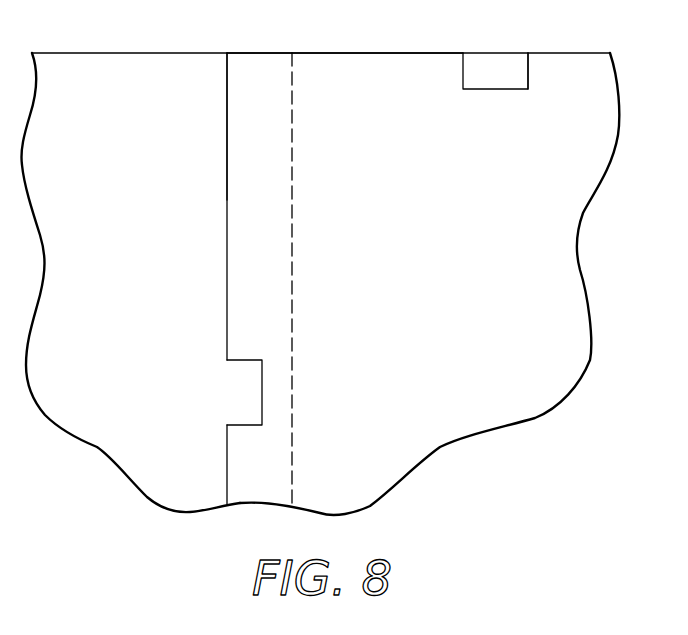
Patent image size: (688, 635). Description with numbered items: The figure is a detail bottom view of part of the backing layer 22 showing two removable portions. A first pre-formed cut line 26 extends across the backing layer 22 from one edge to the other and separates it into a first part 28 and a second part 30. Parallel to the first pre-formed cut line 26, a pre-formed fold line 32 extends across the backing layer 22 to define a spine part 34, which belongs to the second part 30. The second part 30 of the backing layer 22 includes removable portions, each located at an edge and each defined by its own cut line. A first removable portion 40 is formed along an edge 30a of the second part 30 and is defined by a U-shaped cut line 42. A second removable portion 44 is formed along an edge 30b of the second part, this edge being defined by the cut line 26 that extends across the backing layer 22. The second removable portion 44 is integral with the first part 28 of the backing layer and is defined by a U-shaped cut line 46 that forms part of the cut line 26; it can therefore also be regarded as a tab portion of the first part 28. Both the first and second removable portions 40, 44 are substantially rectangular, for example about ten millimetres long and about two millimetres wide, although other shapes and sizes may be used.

The backing layer 22 is at (320, 284).
The first pre-formed cut line 26 is at (227, 192).
The first part of the backing layer 28 is at (141, 269).
The second part of the backing layer 30 is at (448, 268).
The edge of the second part 30a is at (393, 53).
The edge of the second part 30b is at (227, 110).
The pre-formed fold line 32 is at (292, 112).
The spine part 34 is at (259, 68).
The first removable portion 40 is at (496, 68).
The U-shaped cut line 42 is at (528, 72).
The second removable portion 44 is at (243, 392).
The U-shaped cut line 46 is at (245, 427).